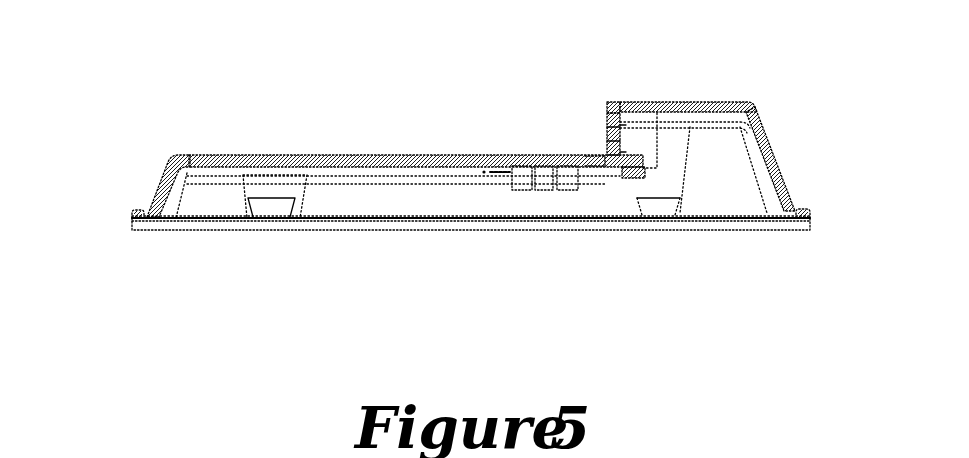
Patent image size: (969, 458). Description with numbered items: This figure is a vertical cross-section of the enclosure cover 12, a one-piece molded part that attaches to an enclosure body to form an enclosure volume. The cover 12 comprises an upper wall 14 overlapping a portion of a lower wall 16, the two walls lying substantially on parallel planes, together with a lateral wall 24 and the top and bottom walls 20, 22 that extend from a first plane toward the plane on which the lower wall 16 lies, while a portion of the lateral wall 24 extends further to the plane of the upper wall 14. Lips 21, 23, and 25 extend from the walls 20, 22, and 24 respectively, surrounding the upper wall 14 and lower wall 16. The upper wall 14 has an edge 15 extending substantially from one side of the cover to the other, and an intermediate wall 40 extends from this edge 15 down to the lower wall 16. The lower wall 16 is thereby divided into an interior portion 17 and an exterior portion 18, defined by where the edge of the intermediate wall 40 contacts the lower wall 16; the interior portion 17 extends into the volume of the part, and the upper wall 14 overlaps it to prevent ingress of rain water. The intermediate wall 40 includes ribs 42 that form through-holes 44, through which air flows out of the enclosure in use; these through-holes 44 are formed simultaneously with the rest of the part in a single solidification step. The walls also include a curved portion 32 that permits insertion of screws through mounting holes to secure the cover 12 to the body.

The cover 12 is at (104, 84).
The upper wall 14 is at (688, 102).
The edge 15 is at (605, 103).
The lower wall 16 is at (323, 155).
The interior portion 17 is at (633, 165).
The exterior portion 18 is at (597, 163).
The top wall 20 is at (767, 143).
The lip 21 is at (812, 222).
The bottom wall 22 is at (423, 204).
The lip 23 is at (474, 222).
The lateral wall 24 is at (160, 184).
The lip 25 is at (133, 220).
The curved portion 32 is at (663, 187).
The intermediate wall 40 is at (528, 99).
The rib 42 is at (607, 141).
The through-hole 44 is at (622, 153).